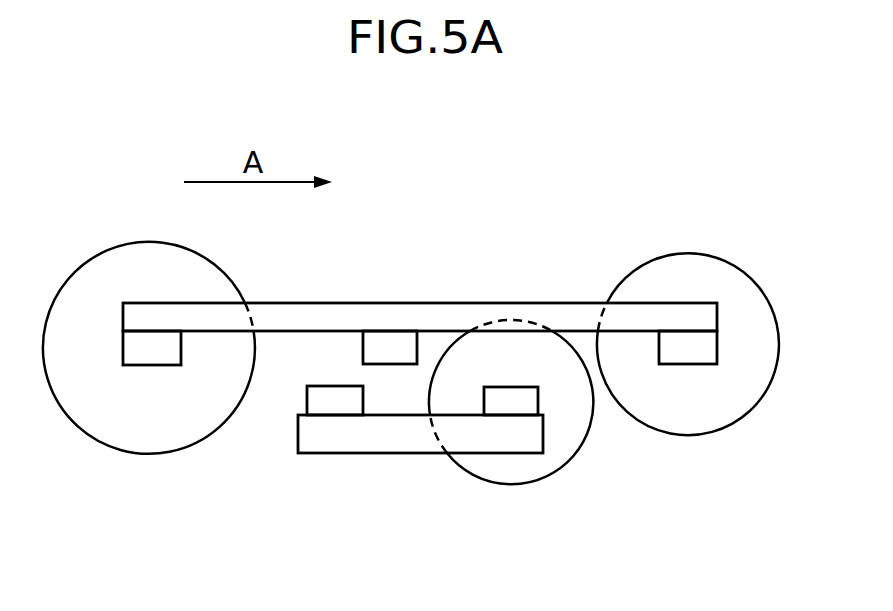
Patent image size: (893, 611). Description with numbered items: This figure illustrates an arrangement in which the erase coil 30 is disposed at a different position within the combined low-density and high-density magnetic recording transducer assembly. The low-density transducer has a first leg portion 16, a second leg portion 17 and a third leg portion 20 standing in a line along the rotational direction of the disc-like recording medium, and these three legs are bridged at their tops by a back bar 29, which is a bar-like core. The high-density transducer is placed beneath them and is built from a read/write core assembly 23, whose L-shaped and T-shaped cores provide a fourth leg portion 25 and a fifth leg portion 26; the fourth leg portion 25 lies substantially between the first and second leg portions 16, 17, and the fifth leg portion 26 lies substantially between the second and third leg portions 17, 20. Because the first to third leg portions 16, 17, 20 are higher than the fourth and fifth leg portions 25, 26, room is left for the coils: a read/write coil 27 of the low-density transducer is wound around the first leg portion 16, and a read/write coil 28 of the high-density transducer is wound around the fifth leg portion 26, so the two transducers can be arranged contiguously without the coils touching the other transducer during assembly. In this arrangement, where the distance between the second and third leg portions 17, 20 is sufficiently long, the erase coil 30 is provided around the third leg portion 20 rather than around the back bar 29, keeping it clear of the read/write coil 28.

The first leg portion 16 is at (165, 355).
The second leg portion 17 is at (388, 331).
The third leg portion 20 is at (680, 340).
The read/write core assembly 23 is at (392, 453).
The fourth leg portion 25 is at (333, 405).
The fifth leg portion 26 is at (530, 397).
The read/write coil 27 is at (145, 427).
The read/write coil 28 is at (513, 470).
The back bar 29 is at (312, 310).
The erase coil 30 is at (707, 412).